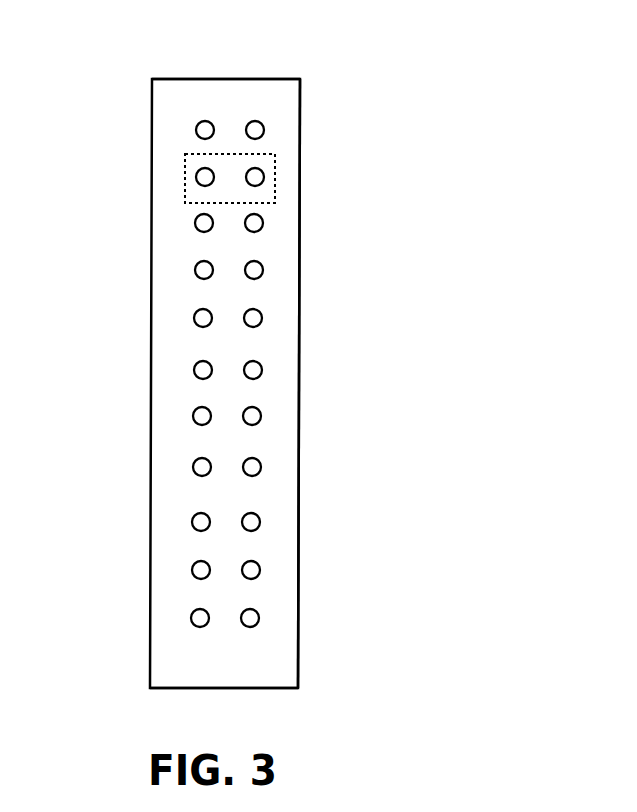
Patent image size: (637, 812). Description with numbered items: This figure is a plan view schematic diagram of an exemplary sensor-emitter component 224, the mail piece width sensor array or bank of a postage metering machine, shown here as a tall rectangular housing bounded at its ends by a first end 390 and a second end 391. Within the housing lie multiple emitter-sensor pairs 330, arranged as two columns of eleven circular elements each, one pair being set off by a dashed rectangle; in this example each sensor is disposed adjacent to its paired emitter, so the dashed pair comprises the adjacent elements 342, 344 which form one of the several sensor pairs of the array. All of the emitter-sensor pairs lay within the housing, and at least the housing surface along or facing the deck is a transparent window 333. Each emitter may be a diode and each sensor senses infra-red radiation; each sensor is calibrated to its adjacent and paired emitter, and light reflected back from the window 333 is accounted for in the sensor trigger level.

The sensor-emitter component 224 is at (382, 309).
The first end 390 is at (200, 79).
The second end 391 is at (207, 688).
The transparent window 333 is at (300, 183).
The emitter-sensor pairs 330 is at (187, 168).
The sensor pair 342 is at (199, 185).
The sensor pair 344 is at (261, 185).